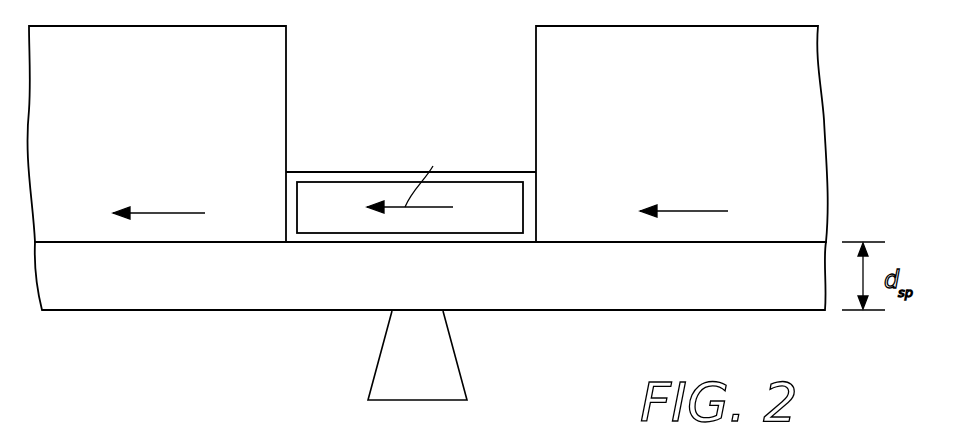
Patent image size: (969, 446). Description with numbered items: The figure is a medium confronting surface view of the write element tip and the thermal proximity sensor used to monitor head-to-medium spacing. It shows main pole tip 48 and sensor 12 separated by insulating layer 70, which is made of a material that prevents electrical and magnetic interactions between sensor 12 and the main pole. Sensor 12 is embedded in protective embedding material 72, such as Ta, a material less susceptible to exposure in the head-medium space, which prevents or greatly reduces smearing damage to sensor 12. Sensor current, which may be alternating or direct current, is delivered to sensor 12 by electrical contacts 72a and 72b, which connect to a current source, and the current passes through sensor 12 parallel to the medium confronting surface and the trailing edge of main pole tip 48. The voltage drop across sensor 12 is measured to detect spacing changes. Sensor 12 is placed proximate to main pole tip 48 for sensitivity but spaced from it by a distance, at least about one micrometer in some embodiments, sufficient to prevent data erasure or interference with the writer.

The electrical contact 72a is at (157, 134).
The electrical contact 72b is at (682, 134).
The embedding material 72 is at (357, 176).
The sensor 12 is at (503, 205).
The insulating layer 70 is at (301, 283).
The main pole tip 48 is at (443, 362).